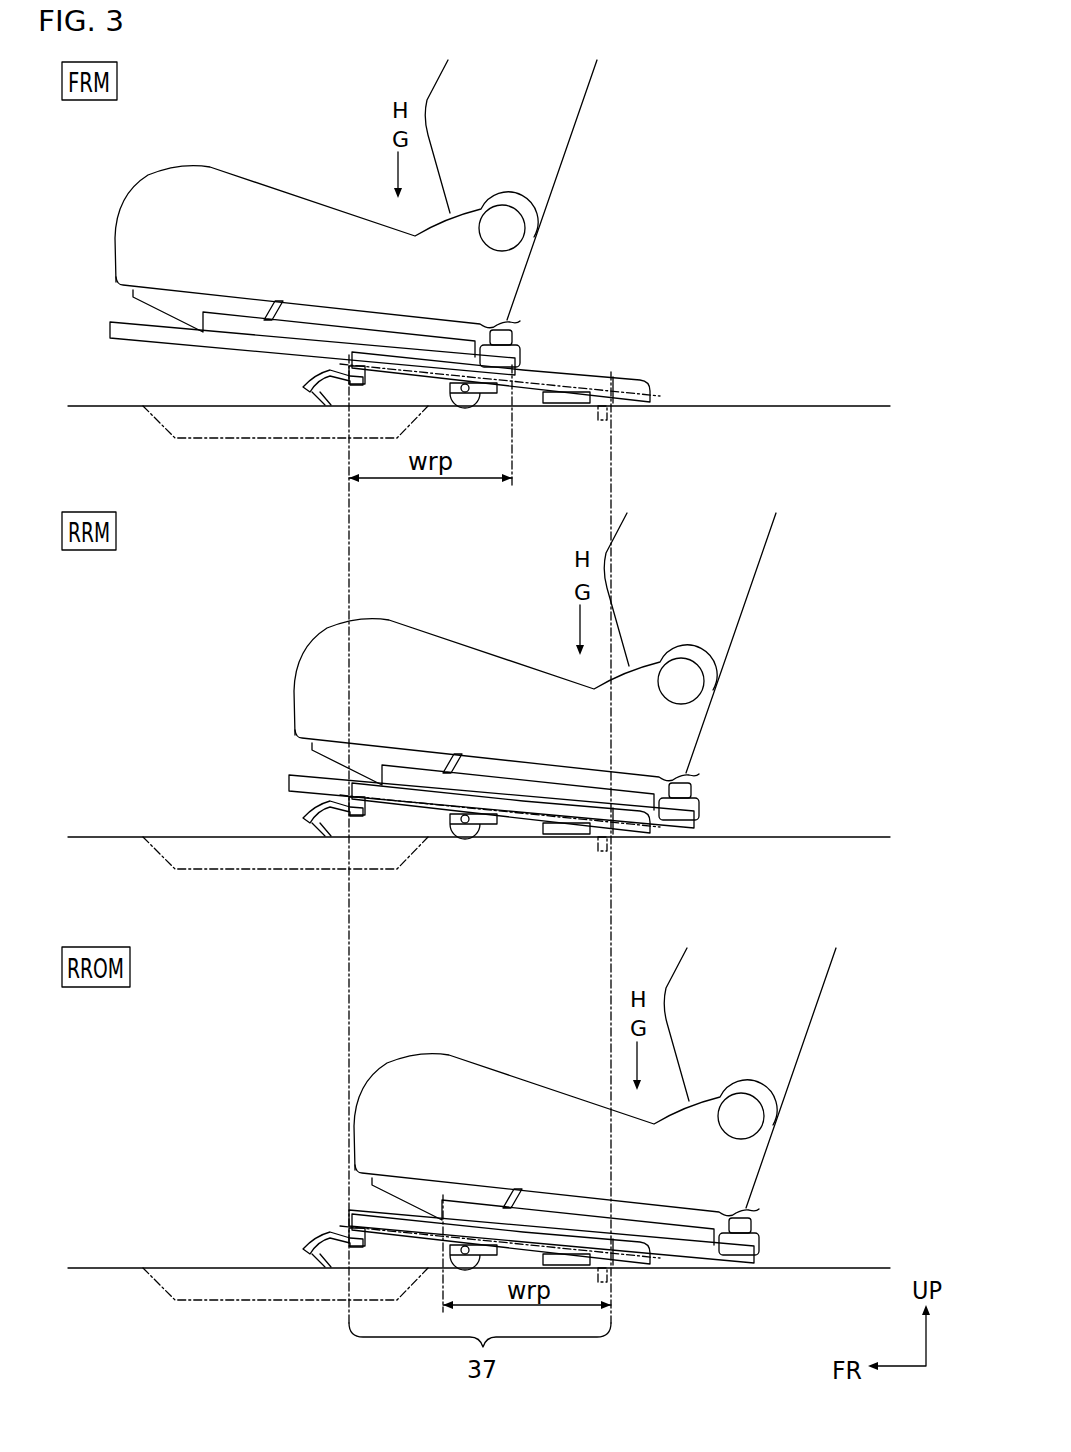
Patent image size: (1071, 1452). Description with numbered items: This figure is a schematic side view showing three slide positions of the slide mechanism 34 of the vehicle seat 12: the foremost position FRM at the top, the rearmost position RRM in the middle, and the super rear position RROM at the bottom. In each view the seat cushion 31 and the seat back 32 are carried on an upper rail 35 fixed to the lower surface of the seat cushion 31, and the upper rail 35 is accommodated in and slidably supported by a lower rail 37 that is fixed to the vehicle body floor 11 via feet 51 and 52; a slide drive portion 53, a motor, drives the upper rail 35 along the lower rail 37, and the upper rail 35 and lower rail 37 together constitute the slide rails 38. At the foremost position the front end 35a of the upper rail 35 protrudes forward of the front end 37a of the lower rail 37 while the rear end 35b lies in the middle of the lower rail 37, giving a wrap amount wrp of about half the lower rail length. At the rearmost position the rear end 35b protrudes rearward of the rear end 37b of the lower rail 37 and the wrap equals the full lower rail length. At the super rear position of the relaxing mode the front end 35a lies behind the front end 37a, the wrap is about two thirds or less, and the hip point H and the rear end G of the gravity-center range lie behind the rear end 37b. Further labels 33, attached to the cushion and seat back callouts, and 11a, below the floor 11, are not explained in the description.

The vehicle body floor 11 is at (862, 1265).
The floor recess 11a is at (181, 440).
The seat 12 is at (336, 123).
The seat cushion 31 is at (231, 171).
The seat back 32 is at (579, 108).
The seat frame 33 is at (496, 652).
The slide mechanism 34 is at (585, 271).
The upper rail 35 is at (449, 756).
The front end portion of the upper rail 35a is at (350, 1208).
The rear end portion of the upper rail 35b is at (522, 372).
The lower rail 37 is at (468, 732).
The front end of the lower rail 37a is at (352, 350).
The rear end of the lower rail 37b is at (618, 392).
The slide rails 38 is at (265, 371).
The foot 51 is at (604, 420).
The foot 52 is at (290, 390).
The slide drive portion 53 is at (477, 402).